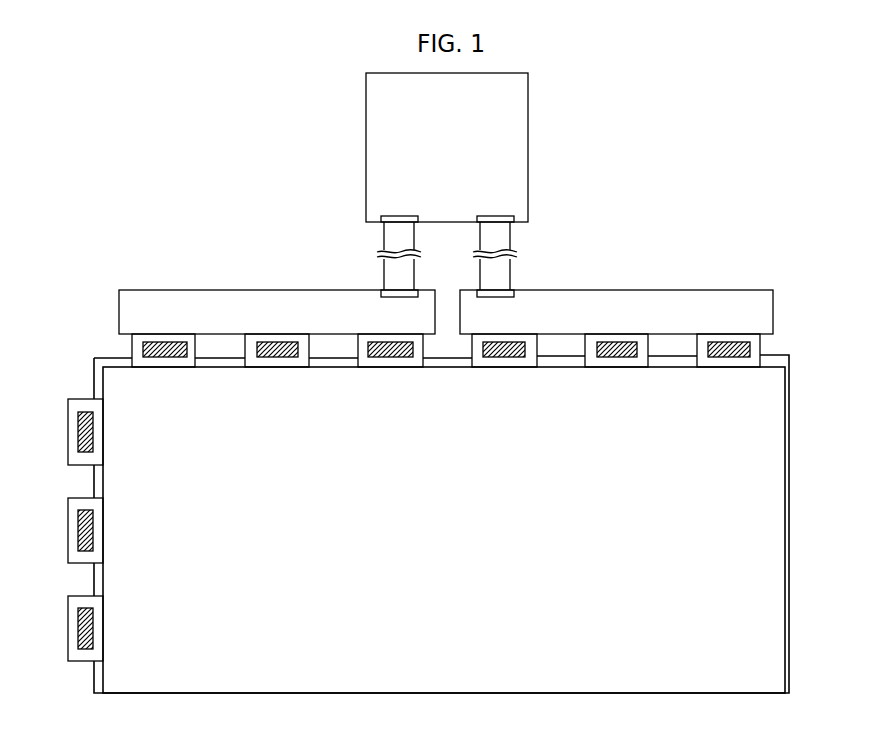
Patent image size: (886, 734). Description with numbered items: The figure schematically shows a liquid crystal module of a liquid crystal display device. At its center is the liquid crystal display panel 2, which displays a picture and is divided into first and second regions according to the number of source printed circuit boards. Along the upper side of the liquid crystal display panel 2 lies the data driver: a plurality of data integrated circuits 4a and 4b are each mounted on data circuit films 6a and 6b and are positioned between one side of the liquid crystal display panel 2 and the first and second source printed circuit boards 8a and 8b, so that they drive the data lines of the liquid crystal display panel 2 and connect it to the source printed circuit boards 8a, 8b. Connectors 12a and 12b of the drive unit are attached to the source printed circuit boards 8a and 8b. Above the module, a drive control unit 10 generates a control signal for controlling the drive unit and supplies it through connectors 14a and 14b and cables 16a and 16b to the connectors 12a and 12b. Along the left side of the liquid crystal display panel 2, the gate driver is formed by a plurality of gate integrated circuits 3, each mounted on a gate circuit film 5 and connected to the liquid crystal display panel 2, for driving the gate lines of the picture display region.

The liquid crystal display panel 2 is at (783, 543).
The gate integrated circuit 3 is at (78, 430).
The gate circuit film 5 is at (70, 461).
The data integrated circuit 4a is at (729, 345).
The data integrated circuit 4b is at (165, 345).
The data circuit film 6a is at (757, 347).
The data circuit film 6b is at (137, 347).
The first source printed circuit board 8a is at (661, 296).
The second source printed circuit board 8b is at (231, 296).
The drive control unit 10 is at (522, 146).
The connector 12a is at (510, 292).
The connector 12b is at (386, 292).
The connector 14a is at (508, 218).
The connector 14b is at (386, 218).
The cable 16a is at (505, 248).
The cable 16b is at (390, 245).